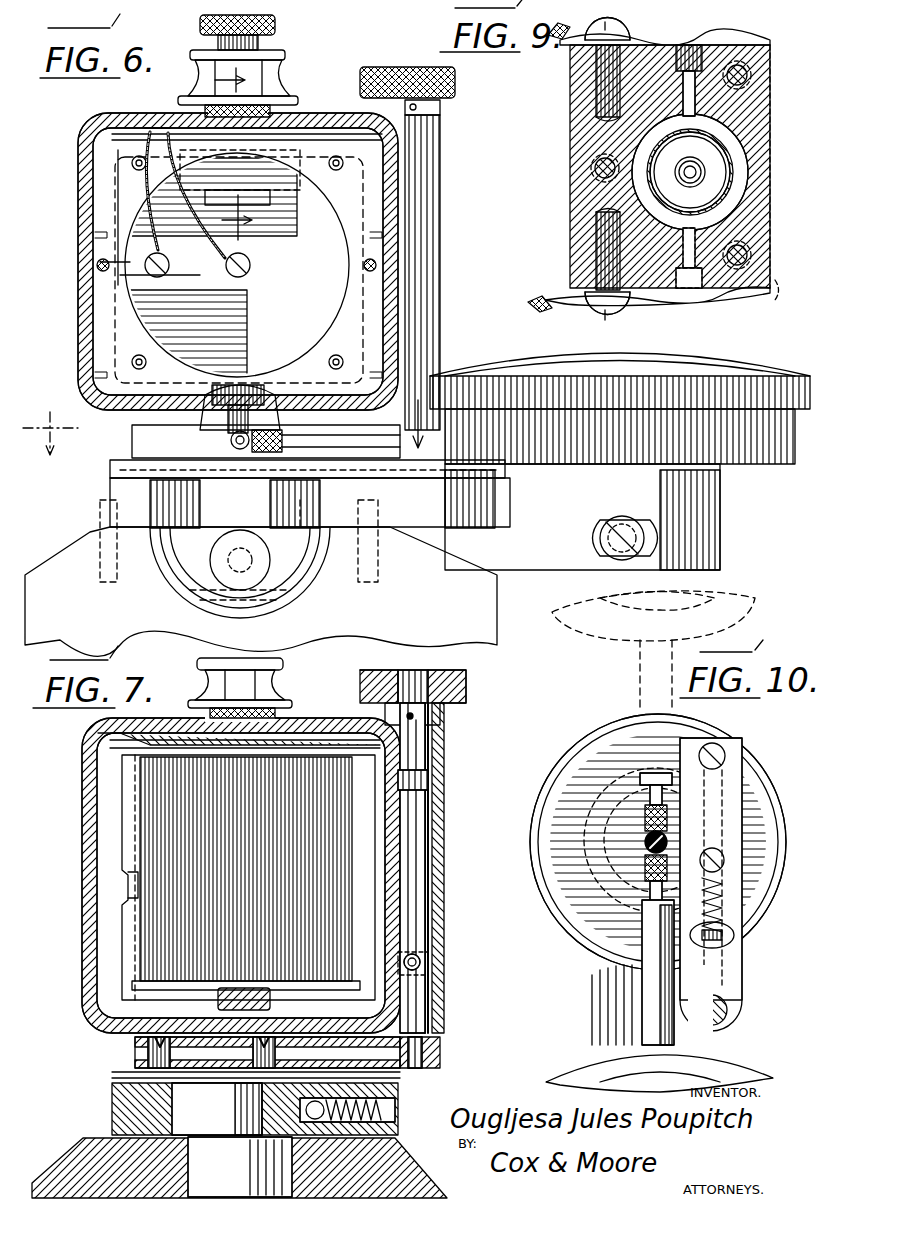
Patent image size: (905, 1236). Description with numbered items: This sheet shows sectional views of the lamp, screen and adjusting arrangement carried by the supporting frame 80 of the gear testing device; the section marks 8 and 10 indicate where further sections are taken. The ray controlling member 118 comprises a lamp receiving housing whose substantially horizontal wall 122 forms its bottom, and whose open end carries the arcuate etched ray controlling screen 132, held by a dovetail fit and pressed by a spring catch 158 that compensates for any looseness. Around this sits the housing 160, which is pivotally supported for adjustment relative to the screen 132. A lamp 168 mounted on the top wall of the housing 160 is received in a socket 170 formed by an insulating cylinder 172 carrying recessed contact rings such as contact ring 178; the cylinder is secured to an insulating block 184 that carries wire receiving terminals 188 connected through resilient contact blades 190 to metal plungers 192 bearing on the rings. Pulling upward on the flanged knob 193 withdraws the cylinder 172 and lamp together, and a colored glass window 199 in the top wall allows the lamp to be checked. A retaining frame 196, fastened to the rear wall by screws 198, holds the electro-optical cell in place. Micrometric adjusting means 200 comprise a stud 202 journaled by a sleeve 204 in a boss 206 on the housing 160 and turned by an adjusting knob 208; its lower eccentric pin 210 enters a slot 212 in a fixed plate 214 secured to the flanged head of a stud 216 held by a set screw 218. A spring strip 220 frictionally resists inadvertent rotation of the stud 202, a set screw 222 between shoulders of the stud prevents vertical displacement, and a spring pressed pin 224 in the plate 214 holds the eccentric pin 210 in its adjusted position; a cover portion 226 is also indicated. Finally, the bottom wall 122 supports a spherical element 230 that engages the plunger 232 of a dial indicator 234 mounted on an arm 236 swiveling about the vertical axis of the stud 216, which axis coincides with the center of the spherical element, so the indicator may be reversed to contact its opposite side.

In FIG. 6, the section line 8- 8 is at (225, 154).
In FIG. 6, the section line 10- 10 is at (227, 416).
In FIG. 6, the supporting frame 80 is at (526, 639).
In FIG. 7, the supporting frame 80 is at (239, 1167).
In FIG. 10, the supporting frame 80 is at (652, 972).
In FIG. 7, the ray controlling member 118 is at (107, 789).
In FIG. 7, the horizontal wall 122 is at (198, 988).
In FIG. 7, the ray controlling screen 132 is at (130, 850).
In FIG. 7, the spring catch 158 is at (128, 890).
In FIG. 6, the housing 160 is at (90, 152).
In FIG. 7, the housing 160 is at (98, 745).
In FIG. 6, the lamp 168 is at (252, 257).
In FIG. 6, the socket 170 is at (278, 207).
In FIG. 9, the insulating cylinder 172 is at (750, 140).
In FIG. 9, the contact ring 178 is at (600, 158).
In FIG. 9, the insulating block 184 is at (578, 200).
In FIG. 9, the wire receiving terminals 188 is at (622, 36).
In FIG. 9, the resilient contact blades 190 is at (692, 40).
In FIG. 9, the metal plungers 192 is at (722, 46).
In FIG. 6, the flanged knob 193 is at (270, 63).
In FIG. 7, the flanged knob 193 is at (282, 680).
In FIG. 6, the retaining frame 196 is at (128, 341).
In FIG. 6, the screws 198 is at (96, 268).
In FIG. 6, the window 199 is at (200, 104).
In FIG. 6, the micrometric adjusting means 200 is at (351, 61).
In FIG. 7, the micrometric adjusting means 200 is at (480, 688).
In FIG. 7, the stud 202 is at (415, 848).
In FIG. 7, the sleeve 204 is at (432, 824).
In FIG. 6, the boss 206 is at (428, 166).
In FIG. 7, the boss 206 is at (442, 800).
In FIG. 6, the adjusting knob 208 is at (458, 90).
In FIG. 7, the adjusting knob 208 is at (466, 700).
In FIG. 7, the eccentric pin 210 is at (442, 1050).
In FIG. 10, the eccentric pin 210 is at (728, 1014).
In FIG. 10, the slot 212 is at (735, 1004).
In FIG. 7, the fixed plate 214 is at (135, 1048).
In FIG. 10, the fixed plate 214 is at (722, 958).
In FIG. 7, the stud 216 is at (185, 1090).
In FIG. 10, the stud 216 is at (646, 820).
In FIG. 6, the set screw 218 is at (258, 570).
In FIG. 7, the spring strip 220 is at (440, 770).
In FIG. 7, the set screw 222 is at (432, 962).
In FIG. 7, the spring pressed pin 224 is at (390, 1078).
In FIG. 10, the spring pressed pin 224 is at (728, 936).
In FIG. 7, the cover 226 is at (313, 740).
In FIG. 6, the spherical element 230 is at (230, 444).
In FIG. 10, the spherical element 230 is at (644, 840).
In FIG. 6, the plunger 232 is at (288, 415).
In FIG. 10, the plunger 232 is at (650, 870).
In FIG. 6, the dial indicator 234 is at (503, 374).
In FIG. 6, the arm 236 is at (708, 504).
In FIG. 10, the arm 236 is at (737, 606).